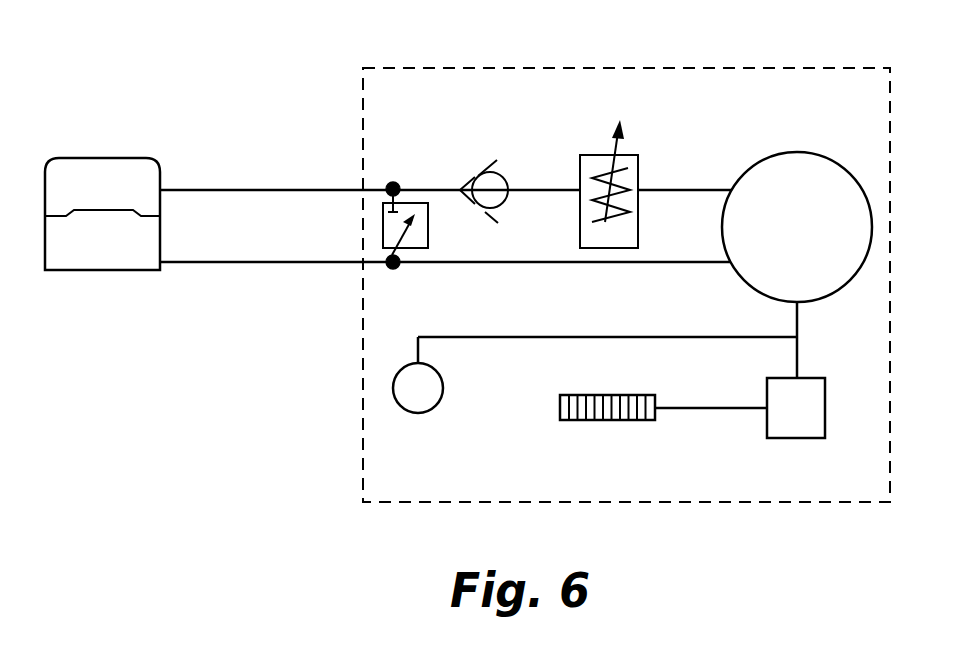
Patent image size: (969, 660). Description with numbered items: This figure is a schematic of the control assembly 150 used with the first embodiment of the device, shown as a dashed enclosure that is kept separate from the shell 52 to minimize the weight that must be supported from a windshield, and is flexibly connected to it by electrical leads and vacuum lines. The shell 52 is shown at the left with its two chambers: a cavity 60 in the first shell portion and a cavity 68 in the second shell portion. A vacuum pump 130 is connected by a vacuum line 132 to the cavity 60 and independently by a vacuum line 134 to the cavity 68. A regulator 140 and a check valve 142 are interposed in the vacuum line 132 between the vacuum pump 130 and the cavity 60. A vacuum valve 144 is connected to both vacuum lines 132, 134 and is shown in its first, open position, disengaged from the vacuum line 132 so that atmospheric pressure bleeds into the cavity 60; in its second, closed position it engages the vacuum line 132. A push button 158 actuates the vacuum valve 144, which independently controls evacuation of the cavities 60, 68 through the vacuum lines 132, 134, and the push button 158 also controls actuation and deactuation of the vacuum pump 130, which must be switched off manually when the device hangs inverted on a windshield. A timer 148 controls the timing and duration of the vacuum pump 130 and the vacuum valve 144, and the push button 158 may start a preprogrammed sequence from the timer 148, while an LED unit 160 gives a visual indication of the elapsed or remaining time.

The shell 52 is at (102, 159).
The cavity 60 is at (98, 185).
The cavity 68 is at (98, 245).
The vacuum pump 130 is at (835, 160).
The vacuum line 132 is at (190, 188).
The vacuum line 134 is at (222, 264).
The regulator 140 is at (640, 163).
The check valve 142 is at (489, 186).
The vacuum valve 144 is at (391, 241).
The timer 148 is at (778, 417).
The control assembly 150 is at (396, 62).
The push button 158 is at (394, 388).
The LED unit 160 is at (560, 405).